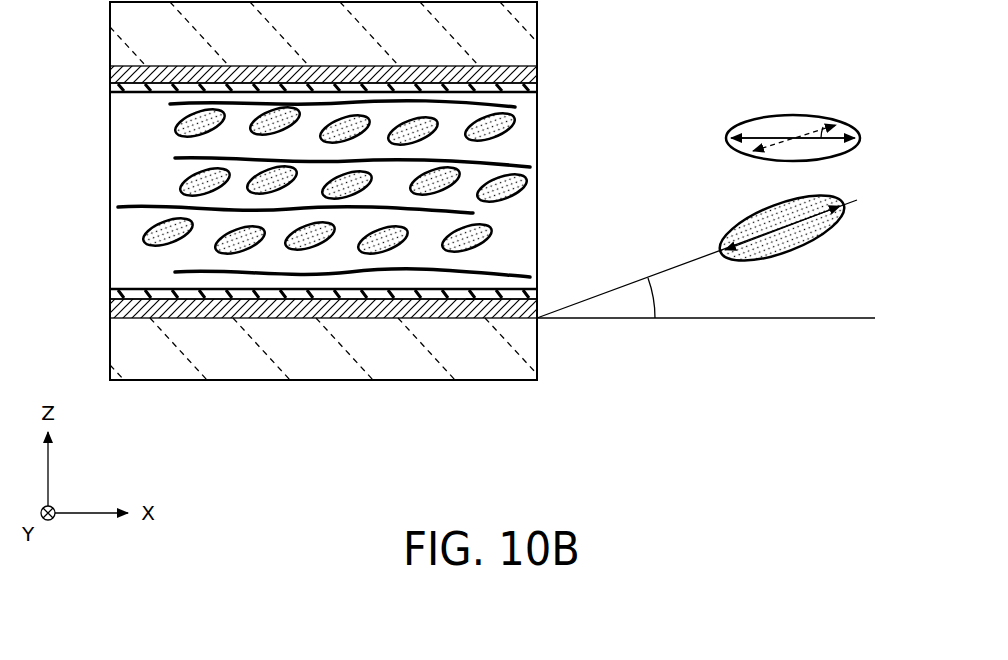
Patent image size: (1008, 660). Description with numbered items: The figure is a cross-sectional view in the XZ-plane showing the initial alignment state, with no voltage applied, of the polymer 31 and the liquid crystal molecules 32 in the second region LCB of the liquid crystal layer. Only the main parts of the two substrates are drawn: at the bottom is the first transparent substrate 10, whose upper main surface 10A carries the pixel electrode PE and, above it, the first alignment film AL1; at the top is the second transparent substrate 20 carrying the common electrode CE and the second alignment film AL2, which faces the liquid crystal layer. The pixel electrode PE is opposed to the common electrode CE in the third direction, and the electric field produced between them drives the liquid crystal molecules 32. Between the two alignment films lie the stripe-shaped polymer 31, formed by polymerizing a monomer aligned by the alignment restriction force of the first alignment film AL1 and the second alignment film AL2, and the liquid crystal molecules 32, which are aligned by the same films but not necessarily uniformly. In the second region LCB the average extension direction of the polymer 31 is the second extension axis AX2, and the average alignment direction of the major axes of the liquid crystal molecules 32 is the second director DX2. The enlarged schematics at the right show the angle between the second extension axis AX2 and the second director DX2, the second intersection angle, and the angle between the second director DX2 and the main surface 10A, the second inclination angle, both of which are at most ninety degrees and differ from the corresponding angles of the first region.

The second transparent substrate 20 is at (120, 37).
The common electrode CE is at (112, 72).
The second alignment film AL2 is at (113, 85).
The second region LCB is at (120, 242).
The polymer 31 is at (475, 213).
The liquid crystal molecule 32 is at (493, 117).
The first alignment film AL1 is at (112, 292).
The pixel electrode PE is at (112, 310).
The first transparent substrate 10 is at (120, 352).
The main surface of the first transparent substrate 10A is at (479, 310).
The second extension axis AX2 is at (764, 136).
The second director DX2 is at (768, 153).